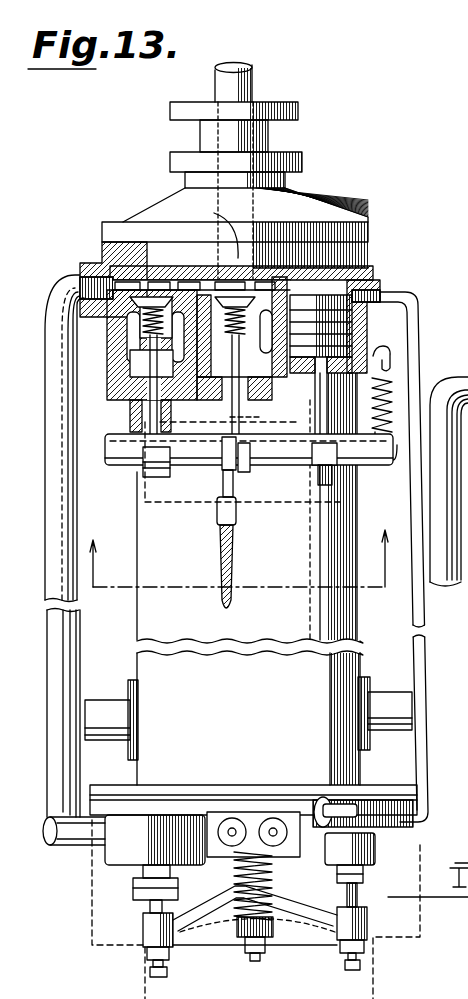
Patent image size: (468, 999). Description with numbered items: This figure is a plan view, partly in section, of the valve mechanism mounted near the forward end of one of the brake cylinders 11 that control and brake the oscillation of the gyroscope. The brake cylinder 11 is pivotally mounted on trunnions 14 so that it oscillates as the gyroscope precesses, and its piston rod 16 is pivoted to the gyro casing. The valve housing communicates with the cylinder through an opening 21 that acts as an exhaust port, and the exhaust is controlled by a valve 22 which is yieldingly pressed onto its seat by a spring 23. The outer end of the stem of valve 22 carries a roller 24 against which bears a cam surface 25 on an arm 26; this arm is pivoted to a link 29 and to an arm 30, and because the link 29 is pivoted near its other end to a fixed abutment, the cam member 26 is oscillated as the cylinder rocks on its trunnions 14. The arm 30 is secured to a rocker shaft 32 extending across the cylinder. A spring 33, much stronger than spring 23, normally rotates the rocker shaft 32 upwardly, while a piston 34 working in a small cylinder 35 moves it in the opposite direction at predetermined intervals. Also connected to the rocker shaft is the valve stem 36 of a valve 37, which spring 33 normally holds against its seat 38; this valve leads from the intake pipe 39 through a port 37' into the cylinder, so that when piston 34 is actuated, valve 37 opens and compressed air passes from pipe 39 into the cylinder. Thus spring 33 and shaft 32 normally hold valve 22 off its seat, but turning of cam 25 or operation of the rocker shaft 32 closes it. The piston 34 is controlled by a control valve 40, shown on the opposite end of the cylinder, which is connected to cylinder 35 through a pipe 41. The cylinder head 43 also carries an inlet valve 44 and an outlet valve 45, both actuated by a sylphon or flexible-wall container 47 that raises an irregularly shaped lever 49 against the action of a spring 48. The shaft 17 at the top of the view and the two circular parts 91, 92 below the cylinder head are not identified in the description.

The brake cylinder 11 is at (250, 712).
The trunnions 14 is at (248, 634).
The piston rod 16 is at (176, 503).
The drive shaft 17 is at (252, 91).
The opening 21 is at (217, 230).
The valve 22 is at (228, 298).
The spring 23 is at (276, 382).
The roller 24 is at (255, 417).
The cam surface 25 is at (240, 438).
The arm 26 is at (244, 482).
The link 29 is at (234, 558).
The arm 30 is at (227, 469).
The rocker shaft 32 is at (108, 465).
The spring 33 is at (374, 421).
The piston 34 is at (330, 313).
The cylinder 35 is at (382, 351).
The valve stem 36 is at (163, 472).
The valve 37 is at (109, 278).
The port 37' is at (237, 251).
The seat 38 is at (171, 290).
The intake pipe 39 is at (256, 546).
The control valve 40 is at (388, 823).
The pipe 41 is at (428, 686).
The cylinder head 43 is at (107, 812).
The inlet valve 44 is at (155, 864).
The outlet valve 45 is at (363, 872).
The sylphon 47 is at (280, 874).
The spring 48 is at (237, 907).
The lever 49 is at (272, 920).
The roller 91 is at (232, 819).
The roller 92 is at (275, 818).